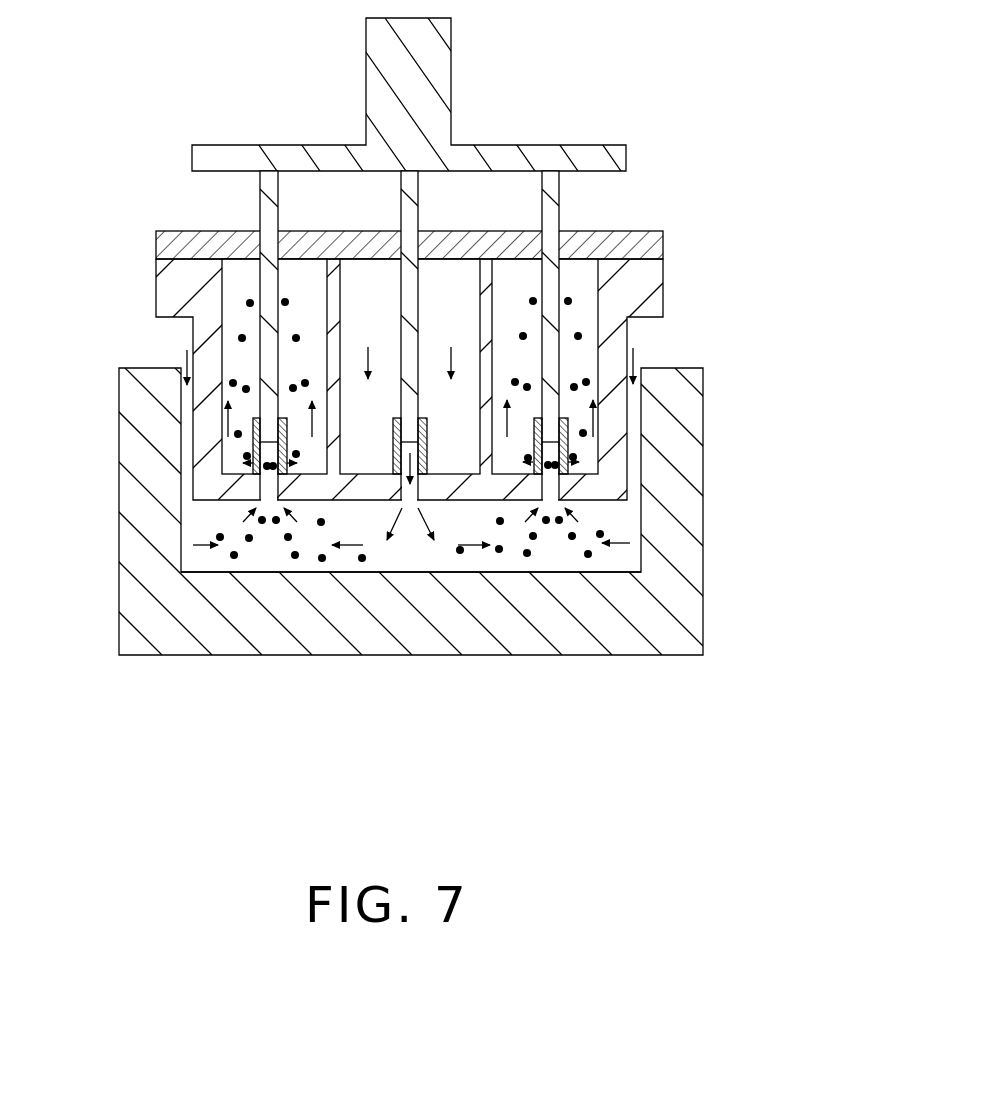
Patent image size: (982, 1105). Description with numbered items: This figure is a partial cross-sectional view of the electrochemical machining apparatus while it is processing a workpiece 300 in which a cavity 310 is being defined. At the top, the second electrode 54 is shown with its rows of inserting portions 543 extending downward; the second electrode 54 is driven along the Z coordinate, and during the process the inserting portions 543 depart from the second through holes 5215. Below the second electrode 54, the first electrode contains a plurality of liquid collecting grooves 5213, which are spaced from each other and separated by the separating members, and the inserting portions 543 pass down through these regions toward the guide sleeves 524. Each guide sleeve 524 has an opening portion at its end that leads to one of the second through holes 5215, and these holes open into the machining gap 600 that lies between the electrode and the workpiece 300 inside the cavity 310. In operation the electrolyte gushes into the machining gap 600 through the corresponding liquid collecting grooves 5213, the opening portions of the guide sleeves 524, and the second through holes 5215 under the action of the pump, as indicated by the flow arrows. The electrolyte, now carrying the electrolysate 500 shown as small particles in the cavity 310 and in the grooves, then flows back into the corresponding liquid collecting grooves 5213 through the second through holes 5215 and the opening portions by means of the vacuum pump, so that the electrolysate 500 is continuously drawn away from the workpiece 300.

The second electrode 54 is at (430, 55).
The inserting portions 543 is at (548, 210).
The liquid collecting grooves 5213 is at (585, 321).
The guide sleeves 524 is at (567, 442).
The second through holes 5215 is at (267, 488).
The cavity 310 is at (640, 513).
The workpiece 300 is at (670, 599).
The electrolysate 500 is at (527, 553).
The machining gap 600 is at (407, 552).